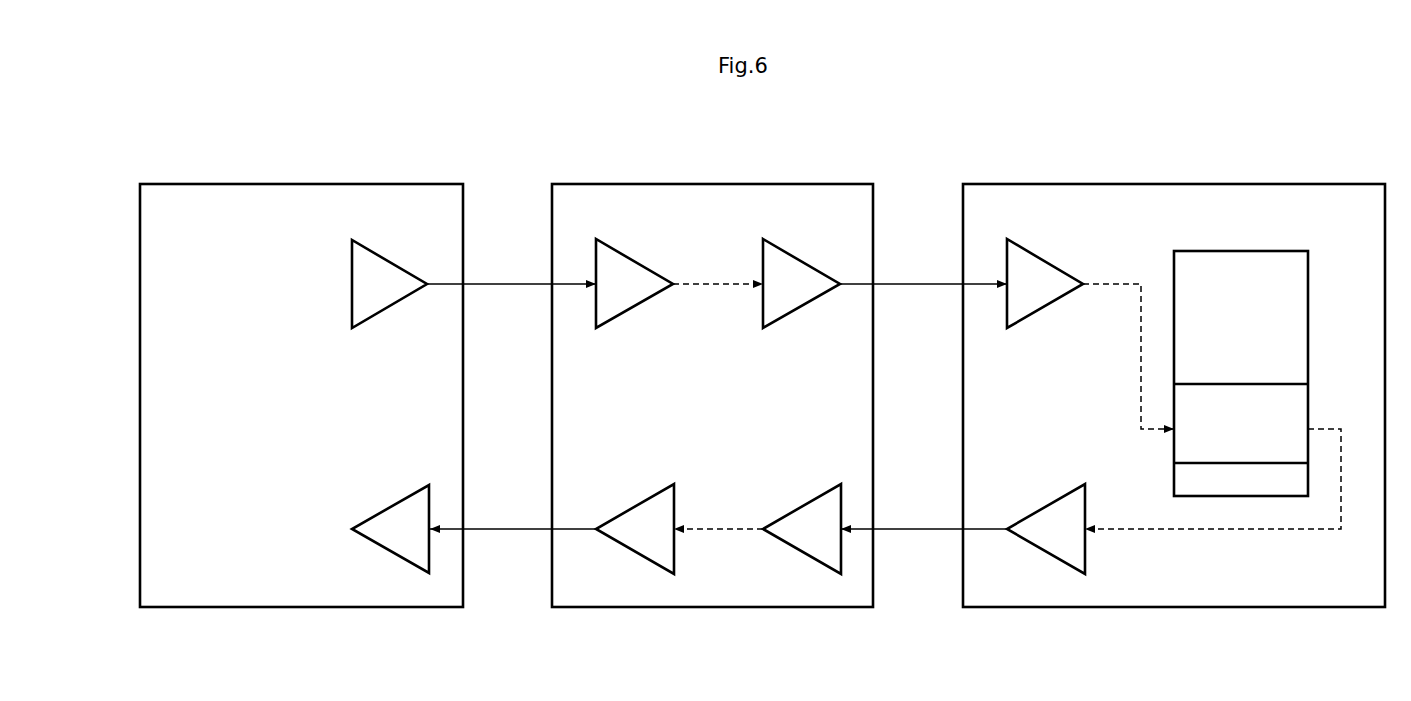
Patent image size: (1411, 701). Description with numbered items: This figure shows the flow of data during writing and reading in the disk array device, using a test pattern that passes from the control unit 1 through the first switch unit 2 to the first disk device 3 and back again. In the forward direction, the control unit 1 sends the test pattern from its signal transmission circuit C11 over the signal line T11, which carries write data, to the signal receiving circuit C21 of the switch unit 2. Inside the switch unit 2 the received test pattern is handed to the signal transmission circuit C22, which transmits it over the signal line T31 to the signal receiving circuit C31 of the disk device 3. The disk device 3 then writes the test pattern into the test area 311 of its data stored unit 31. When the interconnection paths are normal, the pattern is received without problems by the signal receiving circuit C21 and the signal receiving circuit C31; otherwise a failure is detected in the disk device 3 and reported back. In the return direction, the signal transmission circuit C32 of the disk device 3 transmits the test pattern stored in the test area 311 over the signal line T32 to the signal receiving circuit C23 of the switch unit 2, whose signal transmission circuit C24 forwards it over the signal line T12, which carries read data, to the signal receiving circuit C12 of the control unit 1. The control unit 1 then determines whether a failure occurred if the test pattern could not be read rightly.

The control unit 1 is at (375, 183).
The switch unit 2 is at (788, 183).
The disk device 3 is at (1297, 183).
The data stored unit 31 is at (1240, 250).
The test area 311 is at (1308, 402).
The signal transmission circuit C11 is at (425, 237).
The signal receiving circuit C12 is at (395, 503).
The signal receiving circuit C21 is at (632, 257).
The signal transmission circuit C22 is at (835, 237).
The signal receiving circuit C23 is at (805, 503).
The signal transmission circuit C24 is at (638, 503).
The signal receiving circuit C31 is at (1043, 257).
The signal transmission circuit C32 is at (1048, 503).
The signal line T11 is at (508, 283).
The signal line T12 is at (508, 529).
The signal line T31 is at (918, 283).
The signal line T32 is at (918, 529).